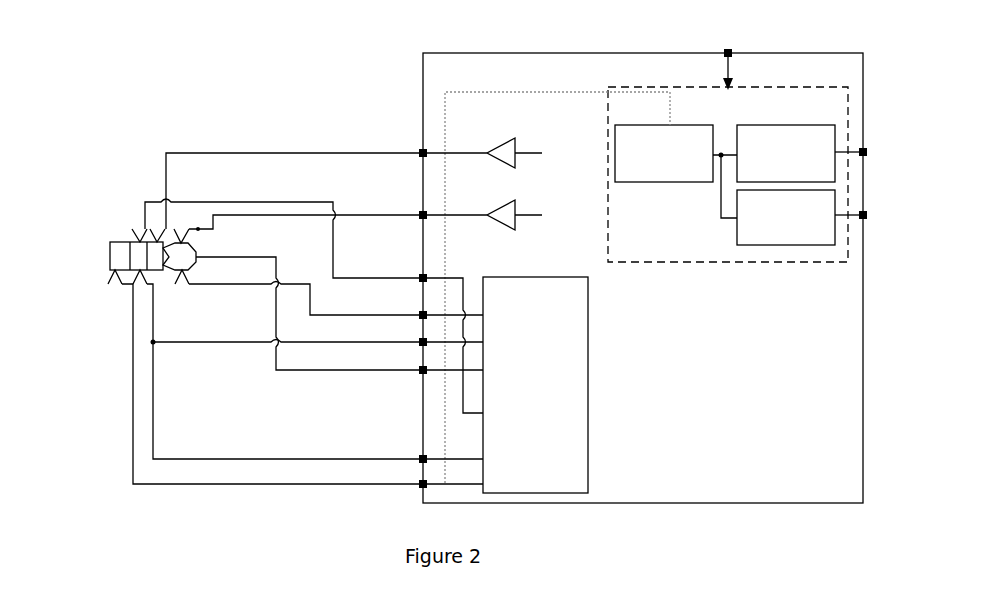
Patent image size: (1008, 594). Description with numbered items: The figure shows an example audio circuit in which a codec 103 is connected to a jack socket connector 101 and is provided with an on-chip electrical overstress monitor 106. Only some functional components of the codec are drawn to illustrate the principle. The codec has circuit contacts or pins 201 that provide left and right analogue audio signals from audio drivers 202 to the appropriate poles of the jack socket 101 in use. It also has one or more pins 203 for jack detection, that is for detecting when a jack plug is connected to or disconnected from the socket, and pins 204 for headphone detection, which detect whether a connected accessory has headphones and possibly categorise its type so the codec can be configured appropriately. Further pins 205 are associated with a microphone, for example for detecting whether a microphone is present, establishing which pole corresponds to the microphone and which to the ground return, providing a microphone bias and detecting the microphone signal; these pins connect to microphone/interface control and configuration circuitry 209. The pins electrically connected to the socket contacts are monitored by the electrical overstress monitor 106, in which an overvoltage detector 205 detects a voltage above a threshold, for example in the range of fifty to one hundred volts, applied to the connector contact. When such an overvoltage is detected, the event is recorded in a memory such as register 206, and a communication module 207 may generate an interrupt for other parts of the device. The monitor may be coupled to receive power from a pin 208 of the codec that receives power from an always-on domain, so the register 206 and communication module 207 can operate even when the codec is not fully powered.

The jack socket connector 101 is at (98, 221).
The codec 103 is at (643, 278).
The electrical overstress monitor 106 is at (728, 174).
The pins 201 is at (419, 150).
The audio drivers 202 is at (495, 141).
The pins for jack detection 203 is at (419, 340).
The pins for headphone detection 204 is at (419, 455).
The overvoltage detector 205 is at (372, 508).
The register 206 is at (802, 217).
The communication module 207 is at (802, 153).
The pin 208 is at (725, 50).
The microphone/interface control and configuration circuitry 209 is at (535, 385).